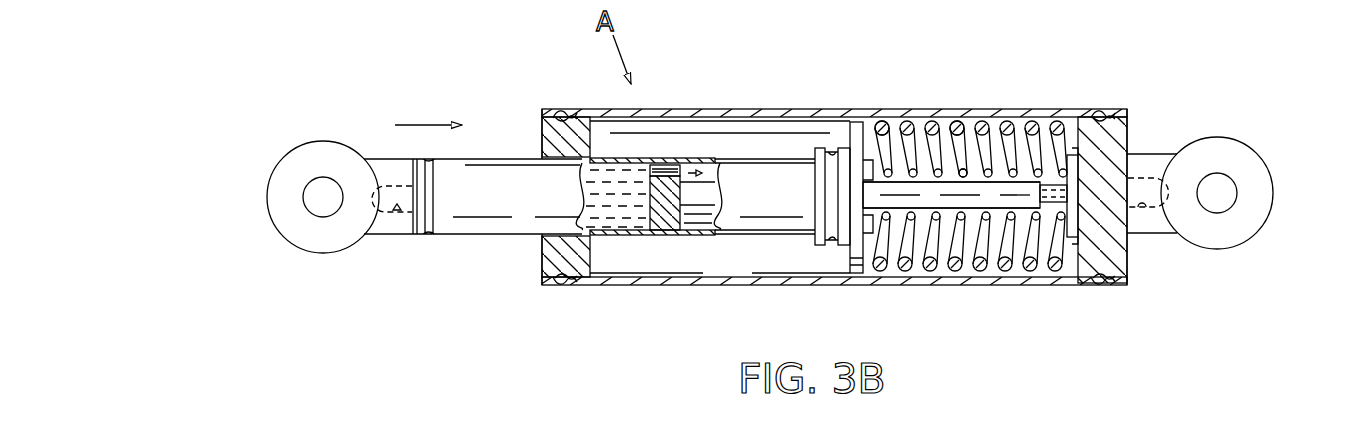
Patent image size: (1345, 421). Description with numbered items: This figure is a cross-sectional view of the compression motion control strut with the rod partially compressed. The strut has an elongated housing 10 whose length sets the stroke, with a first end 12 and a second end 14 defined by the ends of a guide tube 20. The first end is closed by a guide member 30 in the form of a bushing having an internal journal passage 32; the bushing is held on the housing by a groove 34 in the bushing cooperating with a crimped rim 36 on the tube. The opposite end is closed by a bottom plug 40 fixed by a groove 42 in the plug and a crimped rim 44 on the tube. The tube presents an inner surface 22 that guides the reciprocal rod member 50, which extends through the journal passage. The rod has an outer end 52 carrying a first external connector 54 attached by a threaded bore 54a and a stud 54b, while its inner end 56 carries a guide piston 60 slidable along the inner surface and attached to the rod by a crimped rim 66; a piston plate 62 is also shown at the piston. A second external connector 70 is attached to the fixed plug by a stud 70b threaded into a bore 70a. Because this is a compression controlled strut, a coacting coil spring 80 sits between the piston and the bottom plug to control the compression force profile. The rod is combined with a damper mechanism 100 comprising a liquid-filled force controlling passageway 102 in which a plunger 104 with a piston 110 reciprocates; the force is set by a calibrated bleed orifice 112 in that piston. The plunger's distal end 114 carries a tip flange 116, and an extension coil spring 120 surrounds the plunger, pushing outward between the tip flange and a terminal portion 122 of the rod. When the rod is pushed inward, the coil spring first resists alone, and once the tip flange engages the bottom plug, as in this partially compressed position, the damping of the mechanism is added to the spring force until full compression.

The elongated housing 10 is at (715, 107).
The first end 12 is at (545, 110).
The second end 14 is at (1122, 111).
The guide tube 20 is at (983, 121).
The inner surface 22 is at (985, 268).
The guide member 30 is at (536, 138).
The journal passage 32 is at (553, 231).
The groove 34 is at (567, 113).
The crimped rim 36 is at (568, 285).
The bottom plug 40 is at (1134, 131).
The groove 42 is at (1103, 111).
The crimped rim 44 is at (1108, 286).
The rod member 50 is at (490, 236).
The outer end 52 is at (418, 237).
The first external connector 54 is at (305, 252).
The threaded bore 54a is at (397, 212).
The stud 54b is at (390, 185).
The inner end 56 is at (861, 275).
The guide piston 60 is at (848, 250).
The piston plate 62 is at (822, 246).
The crimped rim 66 is at (832, 150).
The second external connector 70 is at (1257, 160).
The bore 70a is at (1150, 210).
The stud 70b is at (1151, 182).
The coil spring 80 is at (958, 121).
The damper mechanism 100 is at (1003, 181).
The force controlling passageway 102 is at (610, 233).
The plunger 104 is at (933, 206).
The piston 110 is at (667, 232).
The calibrated bleed orifice 112 is at (677, 165).
The distal end 114 is at (1035, 204).
The tip flange 116 is at (1068, 240).
The extension coil spring 120 is at (958, 170).
The terminal portion 122 is at (890, 160).